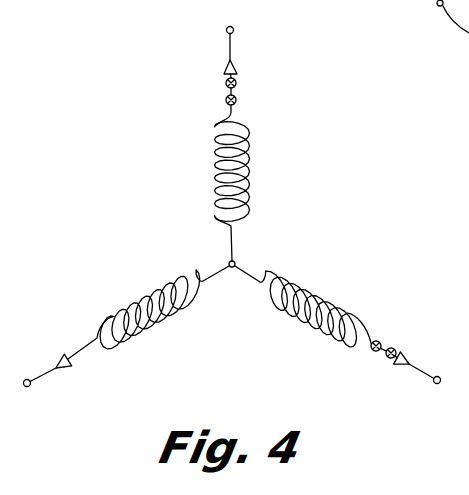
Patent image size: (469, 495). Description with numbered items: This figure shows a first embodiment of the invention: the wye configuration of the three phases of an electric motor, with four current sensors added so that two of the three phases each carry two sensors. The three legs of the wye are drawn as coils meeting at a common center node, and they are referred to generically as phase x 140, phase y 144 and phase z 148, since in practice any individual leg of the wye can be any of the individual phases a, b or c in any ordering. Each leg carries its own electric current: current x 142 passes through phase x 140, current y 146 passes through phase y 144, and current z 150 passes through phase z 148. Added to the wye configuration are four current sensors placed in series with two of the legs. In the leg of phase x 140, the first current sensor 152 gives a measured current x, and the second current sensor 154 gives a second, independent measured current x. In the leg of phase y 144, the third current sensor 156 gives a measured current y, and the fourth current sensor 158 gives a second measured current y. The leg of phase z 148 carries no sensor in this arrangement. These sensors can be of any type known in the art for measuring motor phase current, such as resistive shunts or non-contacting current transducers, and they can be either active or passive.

The phase x 140 is at (234, 30).
The current x 142 is at (237, 67).
The phase y 144 is at (437, 384).
The current y 146 is at (402, 367).
The phase z 148 is at (28, 386).
The current z 150 is at (63, 369).
The first current sensor 152 is at (226, 83).
The second current sensor 154 is at (226, 100).
The third current sensor 156 is at (393, 348).
The fourth current sensor 158 is at (377, 341).